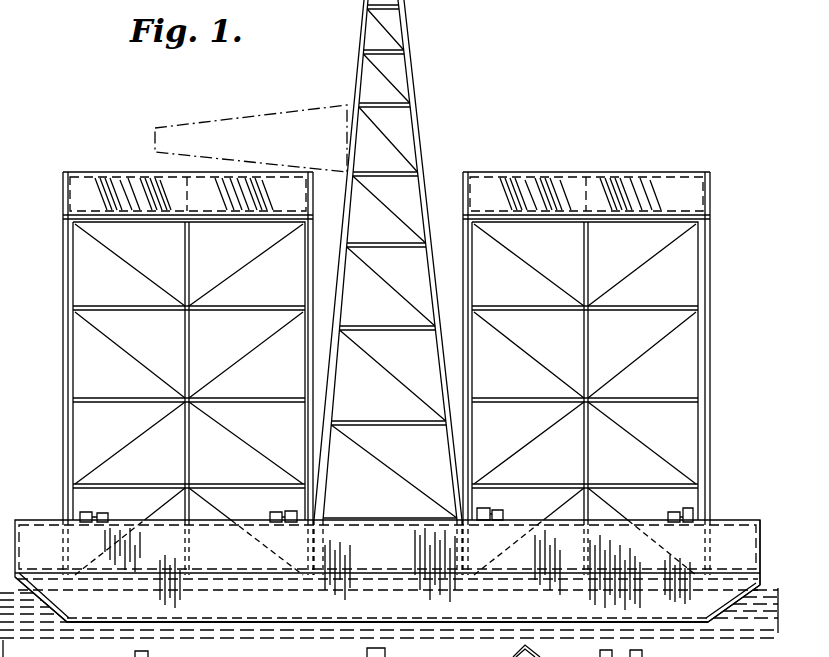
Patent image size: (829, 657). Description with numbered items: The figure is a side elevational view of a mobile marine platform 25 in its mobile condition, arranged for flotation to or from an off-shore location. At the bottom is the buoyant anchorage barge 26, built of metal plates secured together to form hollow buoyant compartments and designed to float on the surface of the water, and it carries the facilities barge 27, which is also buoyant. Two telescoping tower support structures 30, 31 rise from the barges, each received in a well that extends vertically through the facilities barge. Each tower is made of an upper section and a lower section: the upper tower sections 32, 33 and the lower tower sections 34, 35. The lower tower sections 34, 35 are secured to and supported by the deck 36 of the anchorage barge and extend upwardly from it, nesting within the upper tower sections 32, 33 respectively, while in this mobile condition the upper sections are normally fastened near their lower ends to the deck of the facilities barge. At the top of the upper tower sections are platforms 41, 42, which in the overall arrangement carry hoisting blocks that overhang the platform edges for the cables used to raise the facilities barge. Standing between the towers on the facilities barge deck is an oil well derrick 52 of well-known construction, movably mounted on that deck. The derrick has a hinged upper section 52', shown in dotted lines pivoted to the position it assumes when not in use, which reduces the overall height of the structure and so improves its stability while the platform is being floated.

The mobile marine platform 25 is at (48, 518).
The anchorage barge 26 is at (48, 620).
The facilities barge 27 is at (722, 520).
The telescoping tower support structure 30 is at (169, 330).
The telescoping tower support structure 31 is at (606, 326).
The upper tower section 32 is at (63, 275).
The upper tower section 33 is at (711, 273).
The lower tower section 34 is at (75, 376).
The lower tower section 35 is at (698, 366).
The deck 36 is at (80, 583).
The platform 41 is at (92, 174).
The platform 42 is at (512, 174).
The oil well derrick 52 is at (388, 260).
The hinged upper section 52' is at (251, 121).